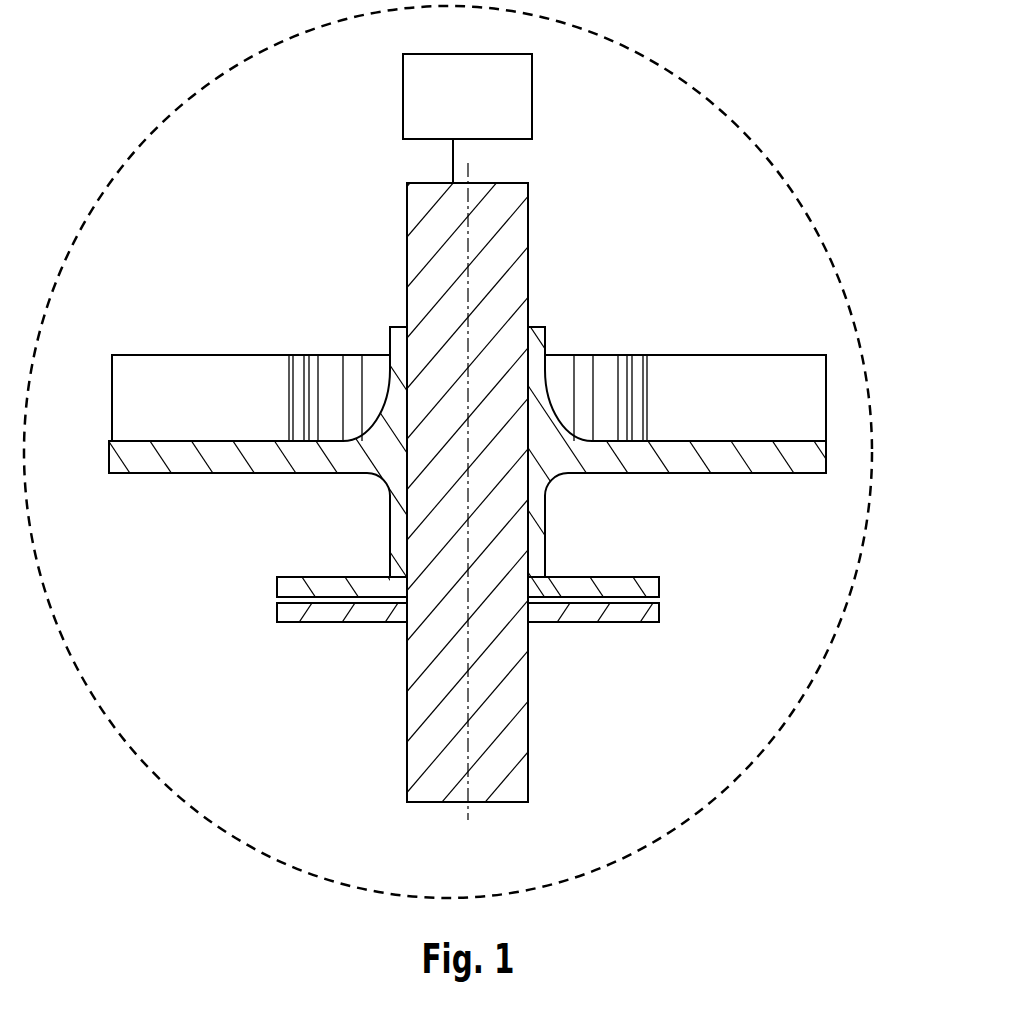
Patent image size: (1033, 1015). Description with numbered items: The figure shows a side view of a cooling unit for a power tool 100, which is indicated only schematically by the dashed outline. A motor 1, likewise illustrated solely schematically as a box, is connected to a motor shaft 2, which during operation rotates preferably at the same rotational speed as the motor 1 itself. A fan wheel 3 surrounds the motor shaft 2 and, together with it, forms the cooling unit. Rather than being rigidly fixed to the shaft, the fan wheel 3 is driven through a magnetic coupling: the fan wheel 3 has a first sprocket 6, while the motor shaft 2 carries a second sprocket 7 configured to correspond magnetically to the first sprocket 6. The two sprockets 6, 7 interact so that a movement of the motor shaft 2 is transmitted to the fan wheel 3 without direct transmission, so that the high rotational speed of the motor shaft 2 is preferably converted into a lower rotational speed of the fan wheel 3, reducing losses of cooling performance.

The power tool 100 is at (653, 60).
The motor 1 is at (532, 98).
The motor shaft 2 is at (552, 750).
The fan wheel 3 is at (158, 498).
The first sprocket 6 is at (683, 562).
The second sprocket 7 is at (628, 645).